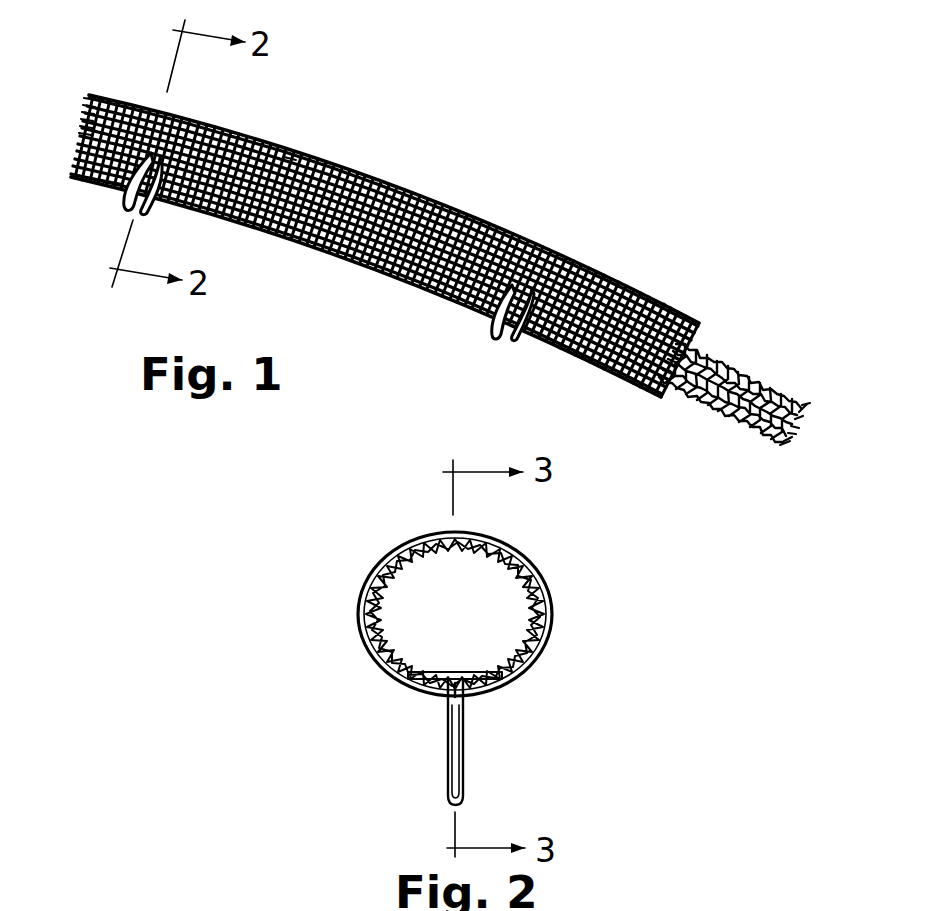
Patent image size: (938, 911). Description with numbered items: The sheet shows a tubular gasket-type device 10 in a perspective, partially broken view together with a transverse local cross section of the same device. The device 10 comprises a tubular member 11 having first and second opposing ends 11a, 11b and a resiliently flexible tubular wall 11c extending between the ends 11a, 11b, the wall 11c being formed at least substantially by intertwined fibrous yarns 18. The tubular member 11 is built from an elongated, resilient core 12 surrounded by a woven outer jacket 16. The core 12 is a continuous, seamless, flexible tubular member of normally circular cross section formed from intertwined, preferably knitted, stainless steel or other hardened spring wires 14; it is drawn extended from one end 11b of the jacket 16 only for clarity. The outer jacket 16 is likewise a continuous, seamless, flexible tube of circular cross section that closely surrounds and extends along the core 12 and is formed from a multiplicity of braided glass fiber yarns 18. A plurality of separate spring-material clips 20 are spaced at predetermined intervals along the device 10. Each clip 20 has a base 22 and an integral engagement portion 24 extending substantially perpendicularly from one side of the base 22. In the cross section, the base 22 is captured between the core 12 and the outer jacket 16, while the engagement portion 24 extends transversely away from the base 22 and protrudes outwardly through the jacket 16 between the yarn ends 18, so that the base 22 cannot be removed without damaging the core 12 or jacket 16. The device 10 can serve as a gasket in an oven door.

In FIG. 1, the tubular gasket-type device 10 is at (365, 157).
In FIG. 2, the tubular gasket-type device 10 is at (548, 568).
In FIG. 1, the tubular member 11 is at (485, 217).
In FIG. 1, the first end 11a is at (787, 447).
In FIG. 1, the second end 11b is at (82, 130).
In FIG. 1, the tubular wall 11c is at (290, 156).
In FIG. 1, the core 12 is at (718, 349).
In FIG. 2, the core 12 is at (378, 619).
In FIG. 1, the spring wires 14 is at (774, 380).
In FIG. 1, the outer jacket 16 is at (624, 283).
In FIG. 2, the outer jacket 16 is at (357, 634).
In FIG. 1, the yarns 18 is at (668, 313).
In FIG. 1, the clip 20 is at (488, 323).
In FIG. 2, the clip 20 is at (447, 729).
In FIG. 2, the base 22 is at (420, 670).
In FIG. 2, the engagement portion 24 is at (463, 757).